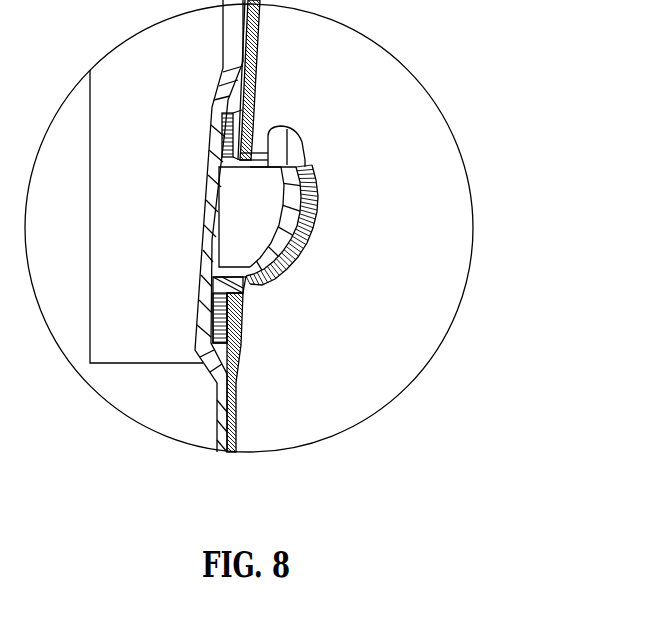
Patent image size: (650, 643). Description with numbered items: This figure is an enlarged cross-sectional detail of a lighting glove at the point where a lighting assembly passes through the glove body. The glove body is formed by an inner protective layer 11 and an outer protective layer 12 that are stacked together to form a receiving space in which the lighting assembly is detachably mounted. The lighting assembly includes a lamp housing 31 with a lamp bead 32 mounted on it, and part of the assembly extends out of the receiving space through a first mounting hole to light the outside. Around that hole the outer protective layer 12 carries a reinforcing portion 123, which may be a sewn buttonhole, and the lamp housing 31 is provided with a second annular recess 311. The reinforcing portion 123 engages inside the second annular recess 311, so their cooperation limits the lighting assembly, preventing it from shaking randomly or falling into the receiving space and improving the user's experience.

The inner protective layer 11 is at (217, 403).
The outer protective layer 12 is at (222, 402).
The reinforcing portion 123 is at (243, 338).
The lamp housing 31 is at (298, 237).
The second annular recess 311 is at (262, 303).
The lamp bead 32 is at (290, 147).